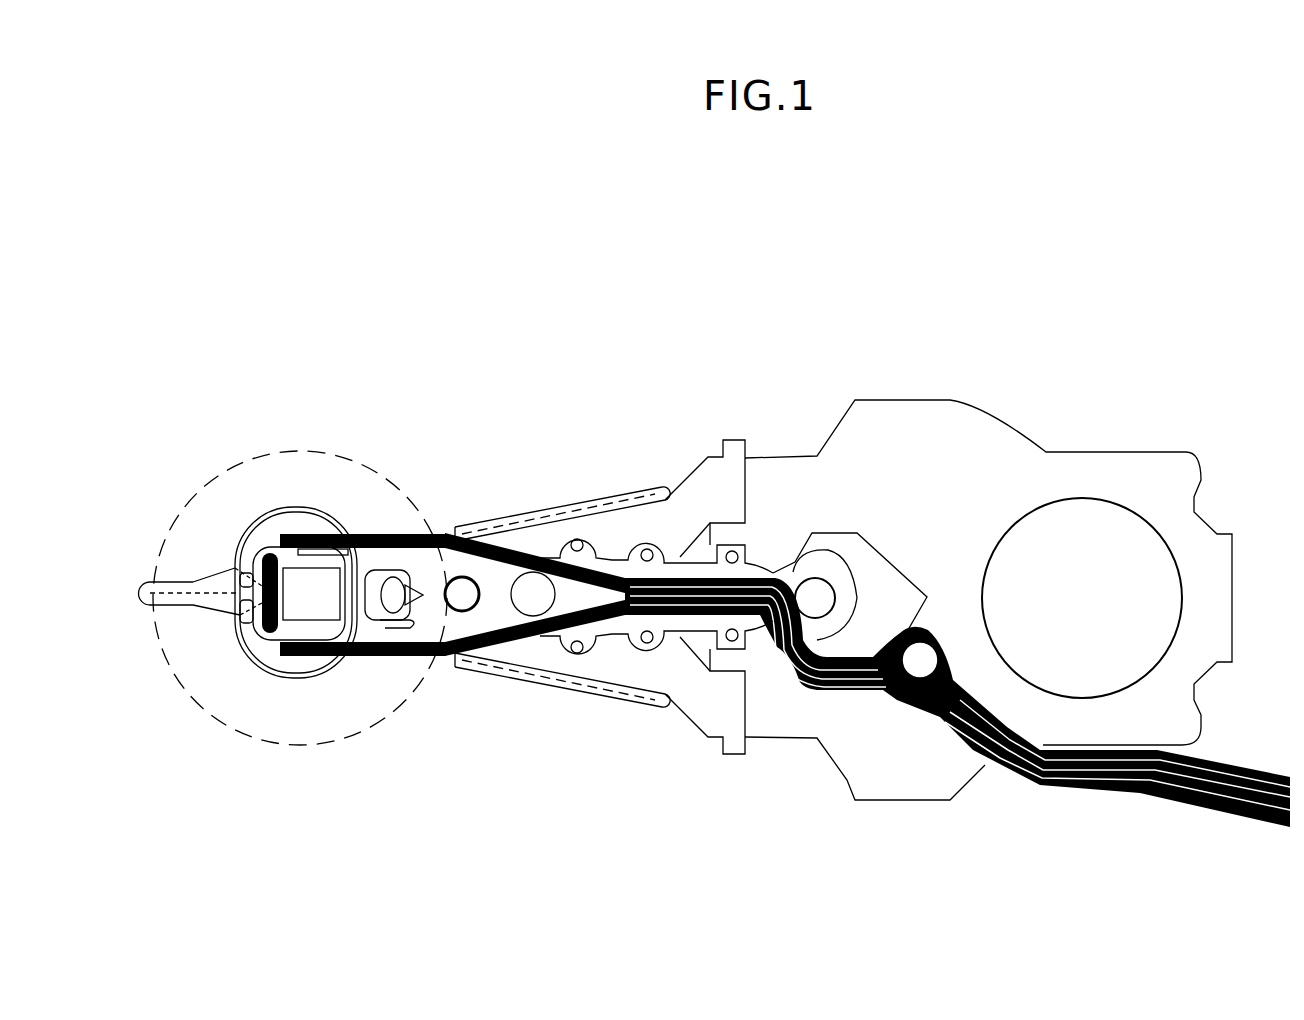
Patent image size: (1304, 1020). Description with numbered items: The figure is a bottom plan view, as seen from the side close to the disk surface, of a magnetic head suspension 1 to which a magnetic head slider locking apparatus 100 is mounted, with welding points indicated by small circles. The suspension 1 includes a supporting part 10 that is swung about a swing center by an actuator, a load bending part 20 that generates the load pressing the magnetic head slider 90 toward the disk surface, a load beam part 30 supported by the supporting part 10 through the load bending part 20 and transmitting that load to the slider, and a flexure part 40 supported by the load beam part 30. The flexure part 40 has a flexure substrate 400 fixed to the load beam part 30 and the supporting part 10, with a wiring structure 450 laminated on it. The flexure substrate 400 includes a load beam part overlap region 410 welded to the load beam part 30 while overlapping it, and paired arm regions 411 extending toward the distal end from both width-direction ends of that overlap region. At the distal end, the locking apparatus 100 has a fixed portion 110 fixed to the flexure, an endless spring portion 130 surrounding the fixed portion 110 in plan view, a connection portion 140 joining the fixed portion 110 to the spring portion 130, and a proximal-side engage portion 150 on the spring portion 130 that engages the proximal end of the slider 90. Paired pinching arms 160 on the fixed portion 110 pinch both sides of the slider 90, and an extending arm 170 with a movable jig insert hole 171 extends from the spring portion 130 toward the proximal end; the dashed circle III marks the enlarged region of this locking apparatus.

The magnetic head suspension 1 is at (552, 478).
The supporting part 10 is at (955, 420).
The load bending part 20 is at (697, 450).
The load beam part 30 is at (536, 692).
The flexure part 40 is at (867, 685).
The magnetic head slider 90 is at (310, 598).
The magnetic head slider locking apparatus 100 is at (316, 585).
The fixed portion 110 is at (270, 632).
The endless spring portion 130 is at (233, 540).
The connection portion 140 is at (193, 615).
The proximal-side engage portion 150 is at (333, 552).
The pinching arms 160 is at (316, 540).
The extending arm 170 is at (402, 568).
The movable jig insert hole 171 is at (405, 628).
The flexure substrate 400 is at (593, 632).
The load beam part overlap region 410 is at (466, 578).
The arm regions 411 is at (390, 528).
The wiring structure 450 is at (630, 627).
The section view indicator III is at (165, 540).